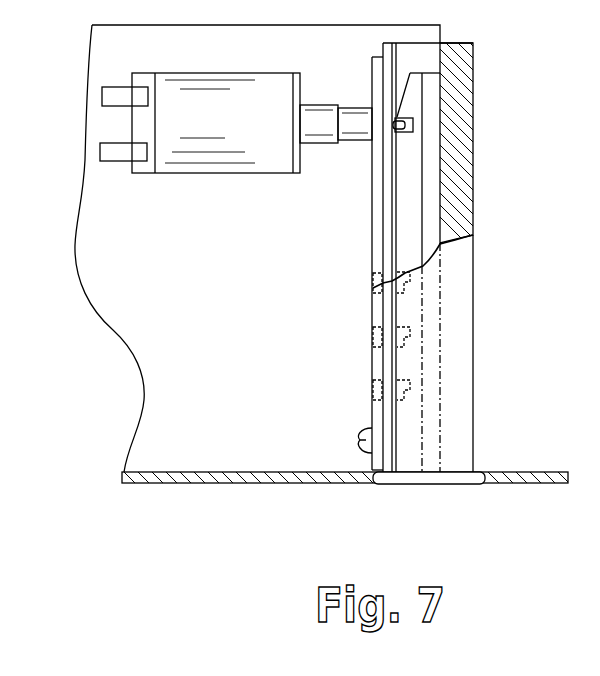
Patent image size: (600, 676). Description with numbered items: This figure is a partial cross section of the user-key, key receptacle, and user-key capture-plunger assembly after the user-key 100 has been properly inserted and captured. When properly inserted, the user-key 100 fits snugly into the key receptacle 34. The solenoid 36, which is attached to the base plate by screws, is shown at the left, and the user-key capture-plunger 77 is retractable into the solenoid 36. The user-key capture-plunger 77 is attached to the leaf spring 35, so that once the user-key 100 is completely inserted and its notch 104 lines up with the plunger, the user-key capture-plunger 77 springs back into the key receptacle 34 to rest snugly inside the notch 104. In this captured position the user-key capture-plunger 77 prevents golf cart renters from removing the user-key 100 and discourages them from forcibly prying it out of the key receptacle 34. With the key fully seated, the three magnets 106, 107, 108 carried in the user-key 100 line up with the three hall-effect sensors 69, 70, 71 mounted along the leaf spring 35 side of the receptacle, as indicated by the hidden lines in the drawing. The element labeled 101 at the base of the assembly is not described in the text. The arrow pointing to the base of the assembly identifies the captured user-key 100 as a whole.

The key receptacle 34 is at (477, 226).
The leaf spring 35 is at (372, 80).
The solenoid 36 is at (230, 175).
The hall-effect sensor 69 is at (372, 397).
The hall-effect sensor 70 is at (372, 345).
The hall-effect sensor 71 is at (372, 288).
The user-key capture-plunger 77 is at (403, 122).
The user-key 100 is at (468, 497).
The base pad 101 is at (395, 486).
The notch 104 is at (405, 130).
The magnet 106 is at (397, 390).
The magnet 107 is at (397, 335).
The magnet 108 is at (397, 280).